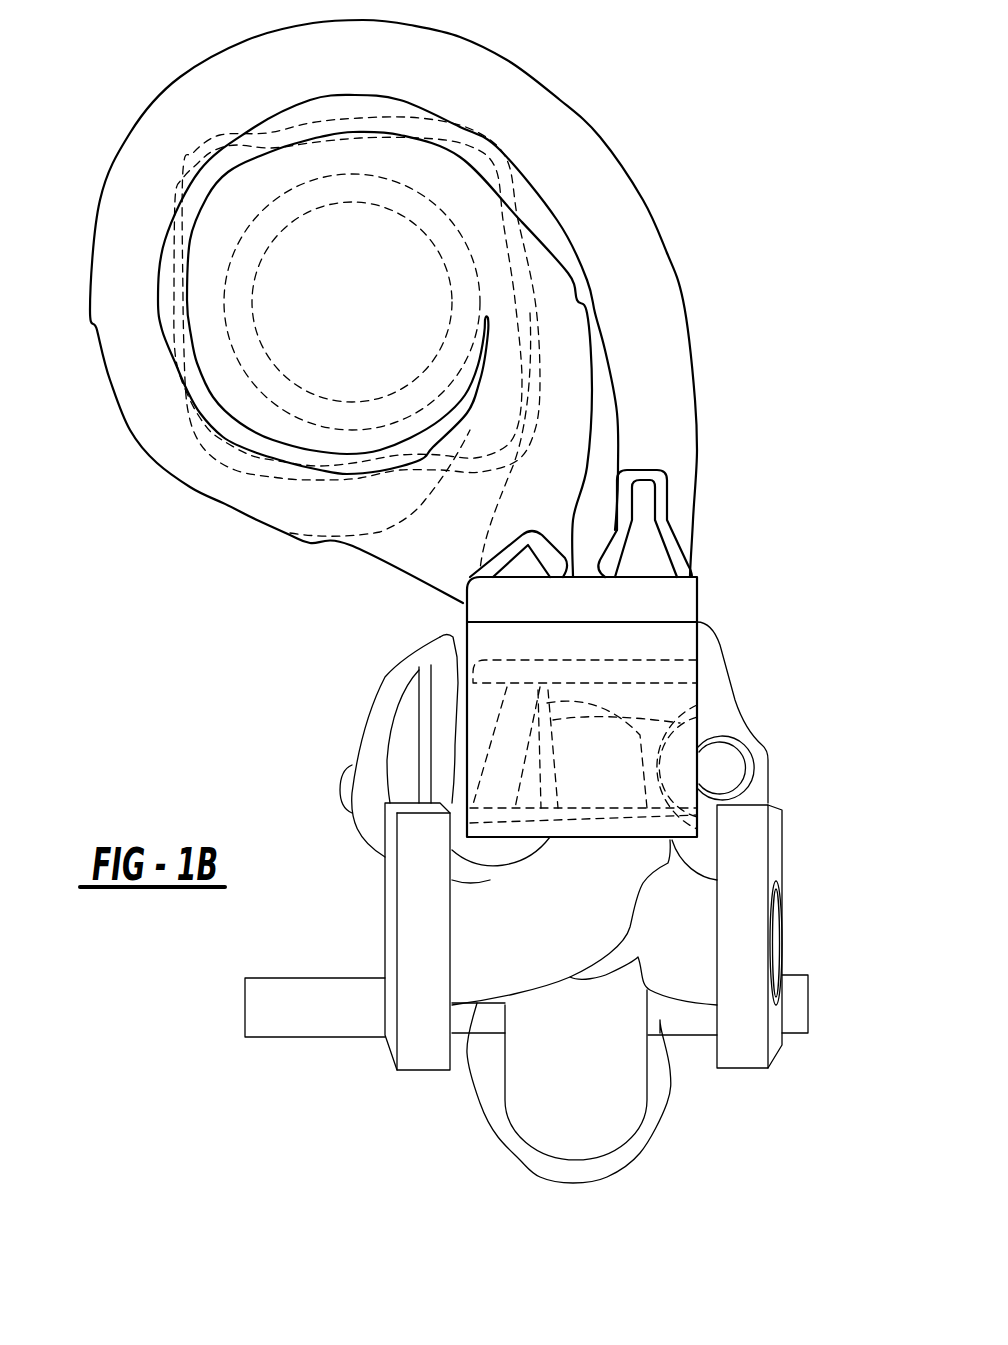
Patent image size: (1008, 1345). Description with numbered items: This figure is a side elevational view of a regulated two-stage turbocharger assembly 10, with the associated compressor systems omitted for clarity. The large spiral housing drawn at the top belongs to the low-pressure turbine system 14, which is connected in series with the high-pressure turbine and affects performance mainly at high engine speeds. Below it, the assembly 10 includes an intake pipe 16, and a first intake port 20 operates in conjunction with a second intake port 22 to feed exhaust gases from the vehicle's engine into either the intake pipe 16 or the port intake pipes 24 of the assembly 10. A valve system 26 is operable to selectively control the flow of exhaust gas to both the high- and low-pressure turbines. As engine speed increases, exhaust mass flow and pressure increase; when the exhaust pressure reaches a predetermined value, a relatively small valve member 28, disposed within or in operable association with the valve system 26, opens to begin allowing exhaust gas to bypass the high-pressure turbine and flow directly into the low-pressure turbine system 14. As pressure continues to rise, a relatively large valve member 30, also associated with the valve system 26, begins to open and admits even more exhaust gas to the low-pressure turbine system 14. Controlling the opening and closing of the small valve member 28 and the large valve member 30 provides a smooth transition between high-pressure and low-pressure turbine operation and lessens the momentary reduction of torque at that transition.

The regulated two-stage turbocharger assembly 10 is at (668, 124).
The low-pressure turbine system 14 is at (566, 93).
The intake pipe 16 is at (507, 1137).
The first intake port 20 is at (782, 1037).
The second intake port 22 is at (397, 1003).
The port intake pipes 24 is at (477, 1003).
The valve system 26 is at (763, 745).
The small valve member 28 is at (628, 813).
The large valve member 30 is at (576, 798).